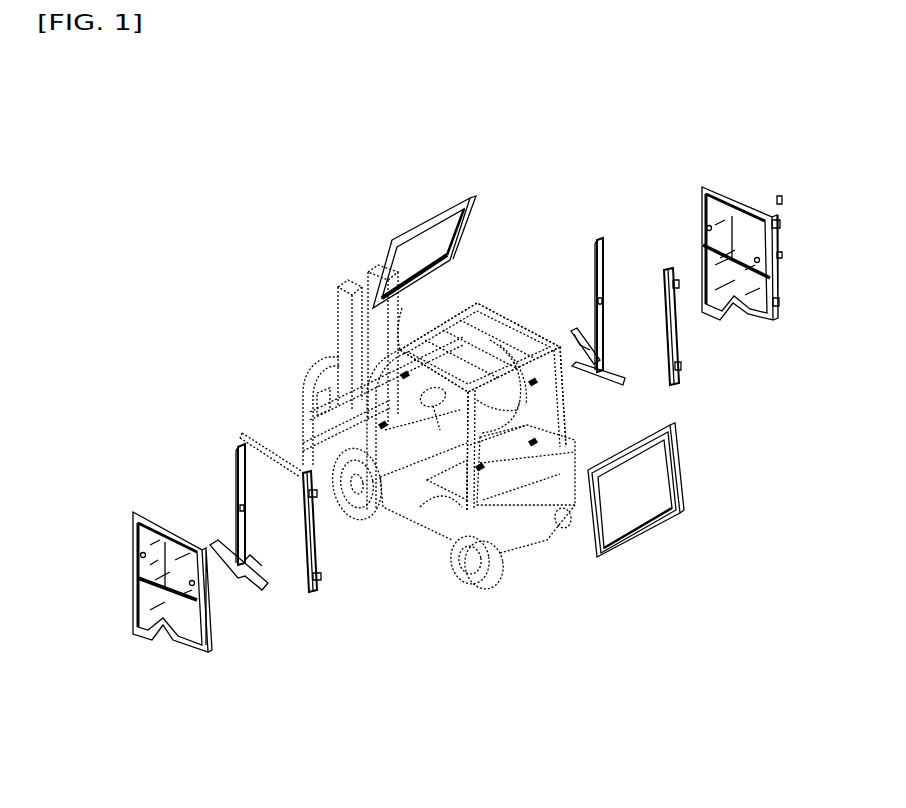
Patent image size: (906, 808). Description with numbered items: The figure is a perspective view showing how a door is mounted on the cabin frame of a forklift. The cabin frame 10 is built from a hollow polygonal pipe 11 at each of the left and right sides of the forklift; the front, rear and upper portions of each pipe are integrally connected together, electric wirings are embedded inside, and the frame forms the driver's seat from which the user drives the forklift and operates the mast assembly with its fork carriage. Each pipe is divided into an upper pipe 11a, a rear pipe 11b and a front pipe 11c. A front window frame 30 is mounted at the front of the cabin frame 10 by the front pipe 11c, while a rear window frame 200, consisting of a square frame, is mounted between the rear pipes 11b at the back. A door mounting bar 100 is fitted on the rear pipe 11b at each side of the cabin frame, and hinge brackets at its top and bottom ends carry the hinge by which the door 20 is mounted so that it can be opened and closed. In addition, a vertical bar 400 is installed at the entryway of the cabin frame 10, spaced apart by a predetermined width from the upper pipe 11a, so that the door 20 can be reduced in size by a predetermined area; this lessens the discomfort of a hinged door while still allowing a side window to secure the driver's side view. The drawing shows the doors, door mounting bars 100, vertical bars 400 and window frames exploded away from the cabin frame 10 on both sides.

The cabin frame 10 is at (553, 184).
The hollow polygonal pipe 11 is at (566, 262).
The upper pipe 11a is at (480, 402).
The rear pipe 11b is at (523, 356).
The front pipe 11c is at (402, 308).
The door 20 is at (734, 197).
The front window frame 30 is at (422, 223).
The door mounting bar 100 is at (683, 340).
The rear window frame 200 is at (643, 537).
The vertical bar 400 is at (607, 263).